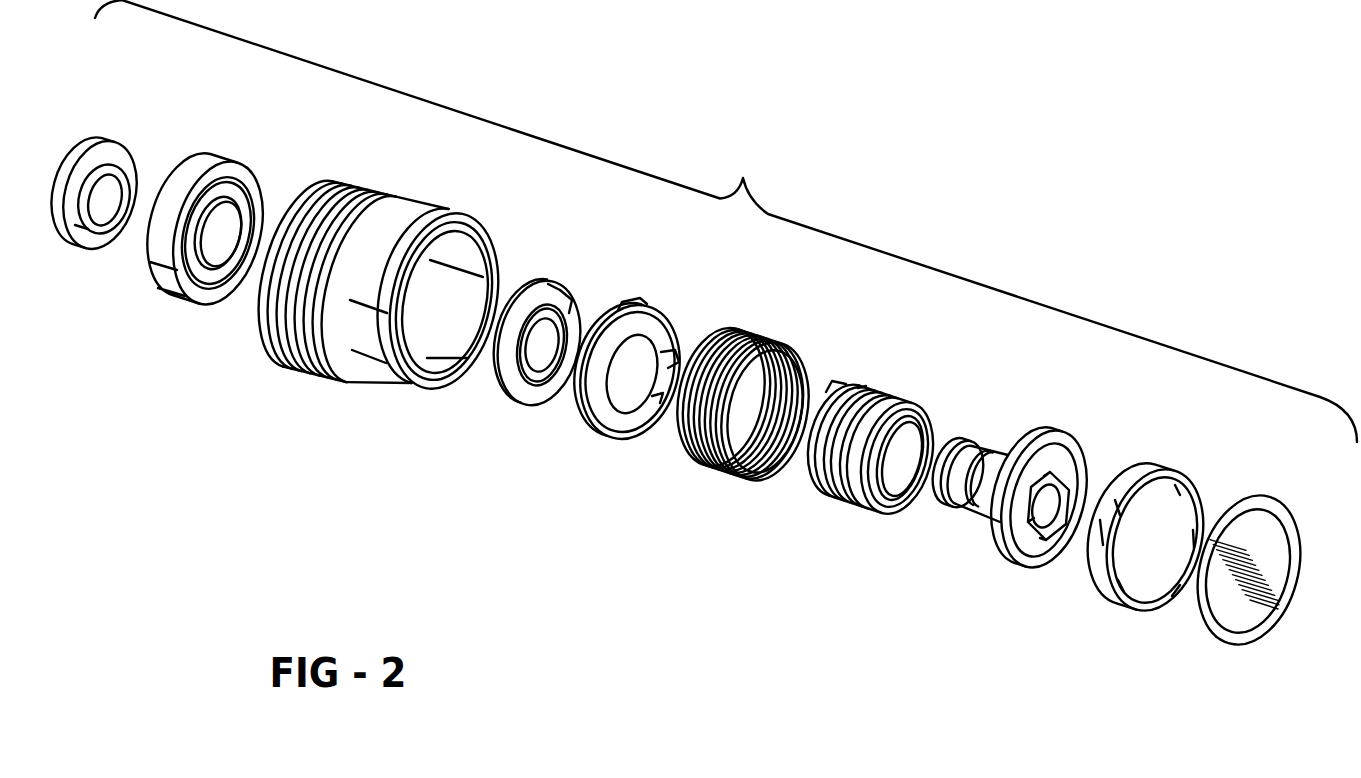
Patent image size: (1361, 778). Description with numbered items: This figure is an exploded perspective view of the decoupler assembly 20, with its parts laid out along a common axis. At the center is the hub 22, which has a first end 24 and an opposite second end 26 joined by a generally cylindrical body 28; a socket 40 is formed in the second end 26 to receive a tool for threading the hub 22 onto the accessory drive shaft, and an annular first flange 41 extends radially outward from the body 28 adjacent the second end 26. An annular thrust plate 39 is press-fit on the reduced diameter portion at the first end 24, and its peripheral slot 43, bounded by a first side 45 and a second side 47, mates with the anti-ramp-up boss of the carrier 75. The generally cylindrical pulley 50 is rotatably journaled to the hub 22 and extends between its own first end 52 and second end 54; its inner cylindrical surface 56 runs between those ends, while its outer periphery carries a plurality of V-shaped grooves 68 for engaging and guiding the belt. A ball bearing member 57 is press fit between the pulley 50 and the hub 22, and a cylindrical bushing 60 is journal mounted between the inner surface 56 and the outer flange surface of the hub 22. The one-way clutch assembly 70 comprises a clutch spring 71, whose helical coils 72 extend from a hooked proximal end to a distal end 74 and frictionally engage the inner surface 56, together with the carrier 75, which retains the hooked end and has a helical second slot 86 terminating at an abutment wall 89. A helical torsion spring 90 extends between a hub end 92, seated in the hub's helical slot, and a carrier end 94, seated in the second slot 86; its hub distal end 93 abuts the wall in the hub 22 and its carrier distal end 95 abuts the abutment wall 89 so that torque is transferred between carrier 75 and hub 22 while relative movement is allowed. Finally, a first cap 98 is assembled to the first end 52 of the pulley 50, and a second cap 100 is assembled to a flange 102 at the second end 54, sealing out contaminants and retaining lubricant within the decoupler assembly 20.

The decoupler assembly 20 is at (898, 178).
The hub 22 is at (1014, 499).
The first end 24 is at (924, 494).
The second end 26 is at (1073, 466).
The body 28 is at (968, 510).
The thrust plate 39 is at (544, 346).
The socket 40 is at (1032, 543).
The first flange 41 is at (998, 552).
The slot 43 is at (570, 291).
The first side 45 is at (558, 282).
The second side 47 is at (585, 312).
The pulley 50 is at (378, 284).
The first end 52 is at (268, 346).
The second end 54 is at (392, 393).
The inner cylindrical surface 56 is at (449, 316).
The ball bearing member 57 is at (235, 164).
The bushing 60 is at (1112, 606).
The V-shaped grooves 68 is at (342, 180).
The one-way clutch assembly 70 is at (739, 374).
The clutch spring 71 is at (768, 340).
The helical coils 72 is at (698, 470).
The distal end 74 is at (776, 487).
The carrier 75 is at (616, 406).
The second slot 86 is at (655, 440).
The abutment wall 89 is at (641, 418).
The torsion spring 90 is at (904, 410).
The hub end 92 is at (936, 430).
The hub distal end 93 is at (918, 400).
The carrier end 94 is at (853, 390).
The carrier distal end 95 is at (816, 380).
The first cap 98 is at (95, 252).
The second cap 100 is at (1277, 627).
The flange 102 is at (438, 236).